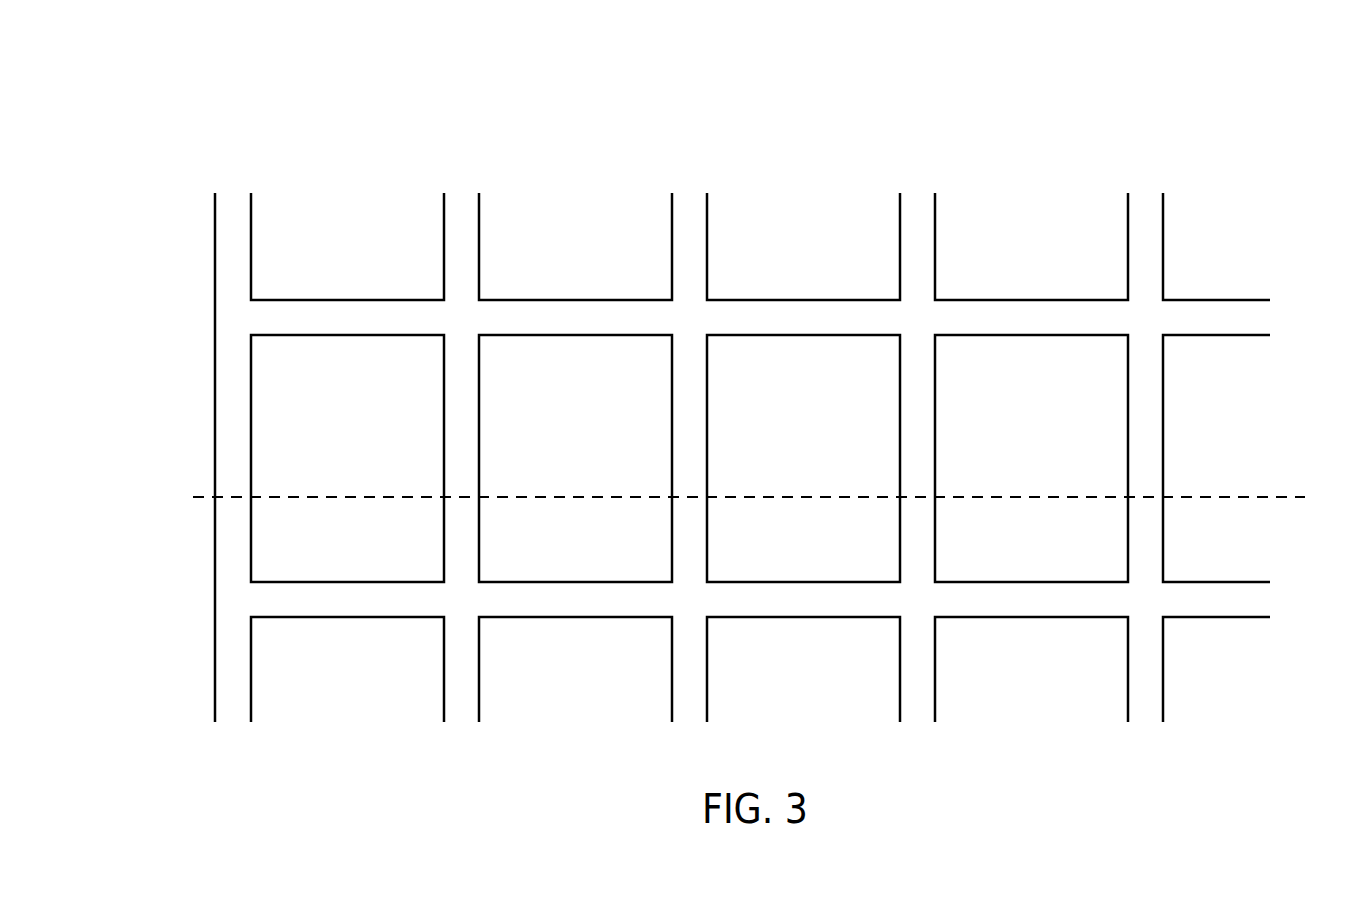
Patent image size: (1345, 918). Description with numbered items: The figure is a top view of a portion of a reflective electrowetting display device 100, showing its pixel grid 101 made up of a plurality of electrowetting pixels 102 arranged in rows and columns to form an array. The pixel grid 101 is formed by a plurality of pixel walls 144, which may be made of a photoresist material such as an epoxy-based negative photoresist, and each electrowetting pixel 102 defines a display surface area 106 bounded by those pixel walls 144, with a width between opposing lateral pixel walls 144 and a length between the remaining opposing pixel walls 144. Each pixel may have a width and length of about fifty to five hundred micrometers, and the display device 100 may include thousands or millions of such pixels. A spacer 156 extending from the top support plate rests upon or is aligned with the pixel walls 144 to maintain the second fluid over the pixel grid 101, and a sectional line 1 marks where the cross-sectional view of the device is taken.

The reflective electrowetting display device 100 is at (1066, 102).
The pixel grid 101 is at (791, 172).
The electrowetting pixel 102 is at (1241, 256).
The display surface area 106 is at (333, 562).
The pixel wall 144 is at (463, 233).
The spacer 156 is at (231, 372).
The sectional line 1- 1 is at (193, 502).